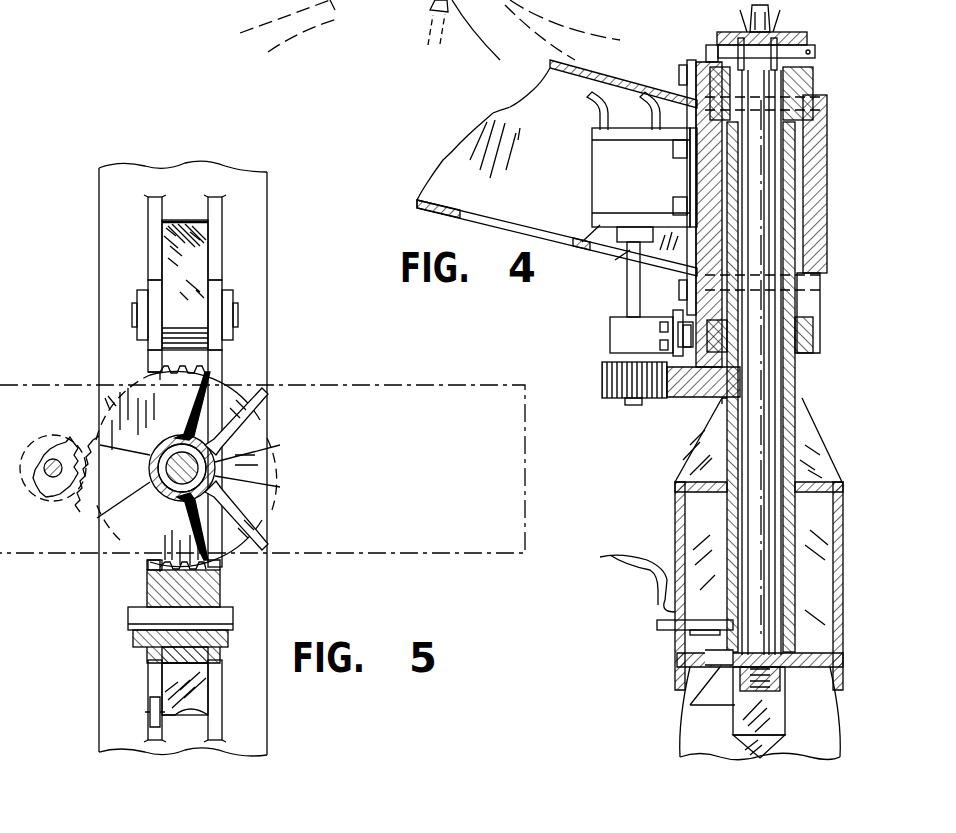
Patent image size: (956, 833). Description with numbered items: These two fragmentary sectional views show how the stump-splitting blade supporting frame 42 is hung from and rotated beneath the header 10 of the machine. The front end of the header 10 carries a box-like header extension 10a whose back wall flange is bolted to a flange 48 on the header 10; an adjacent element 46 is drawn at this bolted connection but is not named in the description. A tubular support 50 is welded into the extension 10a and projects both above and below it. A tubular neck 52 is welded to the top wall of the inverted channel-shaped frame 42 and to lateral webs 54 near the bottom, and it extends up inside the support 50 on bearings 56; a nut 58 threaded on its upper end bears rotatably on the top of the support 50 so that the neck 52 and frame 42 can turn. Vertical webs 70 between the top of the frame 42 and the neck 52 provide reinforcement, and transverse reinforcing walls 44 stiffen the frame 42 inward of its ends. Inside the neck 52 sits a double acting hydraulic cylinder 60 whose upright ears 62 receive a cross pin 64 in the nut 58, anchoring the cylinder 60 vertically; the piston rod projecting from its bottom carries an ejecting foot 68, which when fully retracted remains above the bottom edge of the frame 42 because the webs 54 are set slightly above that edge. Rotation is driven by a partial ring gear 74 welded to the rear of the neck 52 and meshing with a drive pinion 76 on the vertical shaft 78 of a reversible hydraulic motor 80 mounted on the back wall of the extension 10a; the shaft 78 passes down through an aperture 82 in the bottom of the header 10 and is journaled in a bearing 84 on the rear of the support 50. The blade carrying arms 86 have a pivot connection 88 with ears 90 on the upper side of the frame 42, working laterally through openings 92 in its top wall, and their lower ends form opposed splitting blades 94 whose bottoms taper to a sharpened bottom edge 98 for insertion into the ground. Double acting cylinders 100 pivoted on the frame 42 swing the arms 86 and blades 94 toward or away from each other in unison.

In FIG. 4, the header 10 is at (478, 152).
In FIG. 4, the header extension 10a is at (828, 155).
In FIG. 5, the blade supporting frame 42 is at (108, 228).
In FIG. 4, the blade supporting frame 42 is at (840, 520).
In FIG. 4, the transverse reinforcing walls 44 is at (700, 527).
In FIG. 4, the bracket plate 46 is at (700, 60).
In FIG. 4, the flange 48 is at (690, 62).
In FIG. 4, the tubular support 50 is at (822, 285).
In FIG. 5, the tubular neck 52 is at (215, 478).
In FIG. 4, the tubular neck 52 is at (790, 372).
In FIG. 4, the lateral webs 54 is at (828, 655).
In FIG. 4, the bearings 56 is at (815, 85).
In FIG. 4, the nut 58 is at (805, 32).
In FIG. 5, the double acting hydraulic cylinder 60 is at (105, 515).
In FIG. 4, the double acting hydraulic cylinder 60 is at (770, 385).
In FIG. 4, the upright ears 62 is at (760, 16).
In FIG. 4, the cross pin 64 is at (816, 50).
In FIG. 4, the ejecting foot 68 is at (675, 715).
In FIG. 5, the vertical webs 70 is at (108, 387).
In FIG. 4, the vertical webs 70 is at (705, 442).
In FIG. 5, the partial ring gear 74 is at (85, 434).
In FIG. 4, the partial ring gear 74 is at (701, 399).
In FIG. 5, the drive pinion 76 is at (45, 445).
In FIG. 4, the drive pinion 76 is at (612, 400).
In FIG. 5, the vertical shaft 78 is at (48, 480).
In FIG. 4, the vertical shaft 78 is at (632, 290).
In FIG. 4, the reversible hydraulic motor 80 is at (580, 250).
In FIG. 4, the aperture 82 is at (611, 268).
In FIG. 4, the bearing 84 is at (612, 340).
In FIG. 5, the blade carrying arms 86 is at (200, 256).
In FIG. 4, the blade carrying arms 86 is at (780, 710).
In FIG. 5, the pivot connection 88 is at (135, 310).
In FIG. 5, the ears 90 is at (215, 195).
In FIG. 5, the openings 92 is at (160, 236).
In FIG. 4, the splitting blades 94 is at (770, 745).
In FIG. 4, the sharpened bottom edge 98 is at (432, 33).
In FIG. 4, the double acting cylinders 100 is at (690, 740).